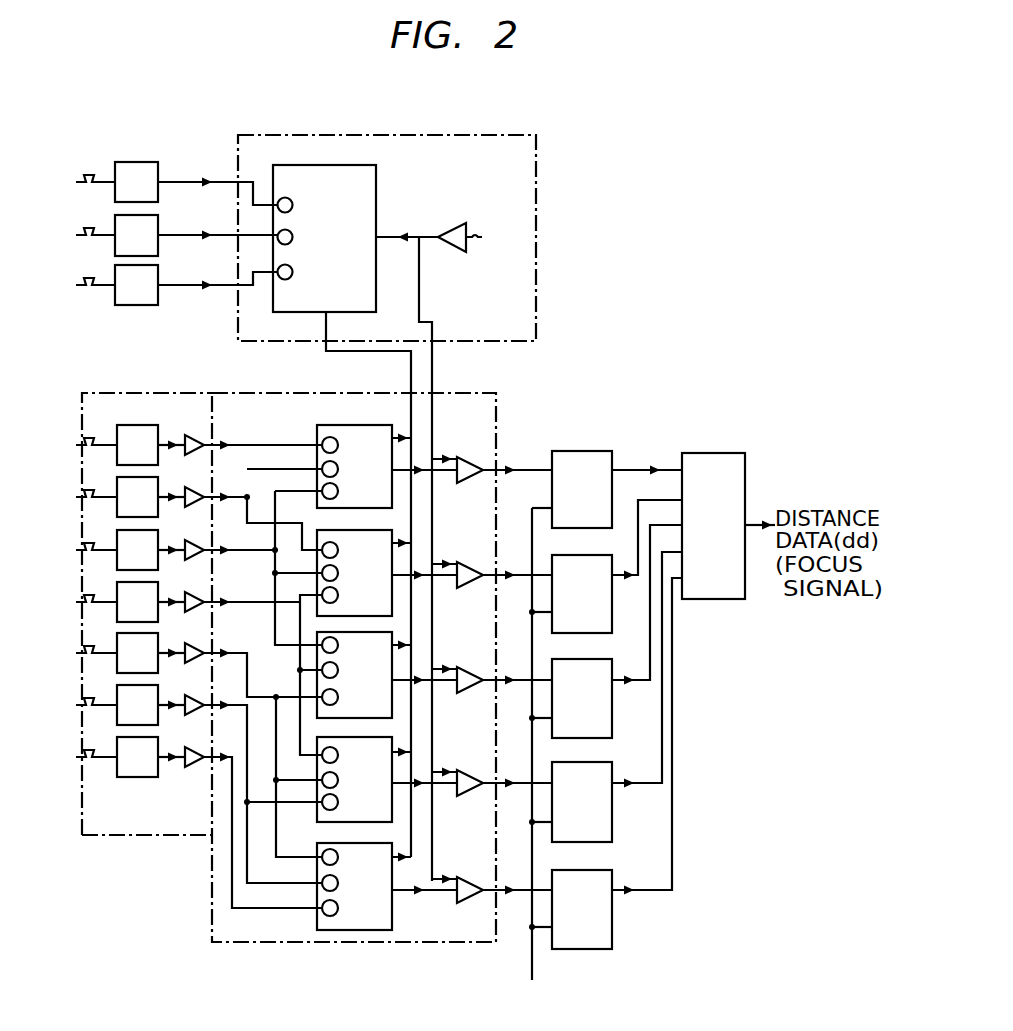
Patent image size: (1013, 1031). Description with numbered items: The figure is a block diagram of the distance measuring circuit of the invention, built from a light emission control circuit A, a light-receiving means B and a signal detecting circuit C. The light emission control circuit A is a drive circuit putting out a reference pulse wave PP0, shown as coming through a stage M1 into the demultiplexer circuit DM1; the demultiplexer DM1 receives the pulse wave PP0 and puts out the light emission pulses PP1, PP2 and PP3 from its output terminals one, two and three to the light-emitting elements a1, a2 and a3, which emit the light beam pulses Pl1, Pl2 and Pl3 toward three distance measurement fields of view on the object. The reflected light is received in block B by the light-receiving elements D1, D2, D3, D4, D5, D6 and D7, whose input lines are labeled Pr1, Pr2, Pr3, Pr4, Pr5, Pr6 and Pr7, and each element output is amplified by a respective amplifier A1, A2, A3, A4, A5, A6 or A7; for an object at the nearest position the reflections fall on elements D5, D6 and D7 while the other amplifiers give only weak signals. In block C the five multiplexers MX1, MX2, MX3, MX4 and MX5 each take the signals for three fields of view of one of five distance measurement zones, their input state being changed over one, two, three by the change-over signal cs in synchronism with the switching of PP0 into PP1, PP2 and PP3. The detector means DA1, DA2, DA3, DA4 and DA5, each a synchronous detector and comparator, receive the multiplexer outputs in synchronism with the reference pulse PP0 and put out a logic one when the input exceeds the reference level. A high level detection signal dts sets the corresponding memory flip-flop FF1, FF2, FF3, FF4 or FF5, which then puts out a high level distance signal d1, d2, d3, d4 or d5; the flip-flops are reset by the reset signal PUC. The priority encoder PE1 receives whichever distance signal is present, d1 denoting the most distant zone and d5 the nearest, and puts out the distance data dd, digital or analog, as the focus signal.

The light emission control circuit A is at (478, 135).
The light-receiving means B is at (104, 822).
The signal detecting circuit C is at (232, 945).
The light-emitting element a1 is at (136, 182).
The light-emitting element a2 is at (136, 235).
The light-emitting element a3 is at (136, 285).
The light beam pulse Pl1 is at (72, 183).
The light beam pulse Pl2 is at (72, 236).
The light beam pulse Pl3 is at (72, 286).
The light emission pulse PP1 is at (217, 181).
The light emission pulse PP2 is at (217, 225).
The light emission pulse PP3 is at (217, 275).
The pulse wave PP0 is at (447, 363).
The demultiplexer circuit DM1 is at (324, 238).
The monostable multivibrator M1 is at (475, 237).
The change-over signal cs is at (368, 587).
The light receiving element signal 1 Pr1 is at (73, 446).
The light receiving element signal 2 Pr2 is at (73, 498).
The light receiving element signal 3 Pr3 is at (73, 551).
The light receiving element signal 4 Pr4 is at (73, 603).
The light receiving element signal 5 Pr5 is at (73, 654).
The light receiving element signal 6 Pr6 is at (73, 706).
The light receiving element signal 7 Pr7 is at (73, 758).
The light-receiving element D1 is at (151, 445).
The light-receiving element D2 is at (151, 497).
The light-receiving element D3 is at (151, 550).
The light-receiving element D4 is at (151, 602).
The light-receiving element D5 is at (151, 653).
The light-receiving element D6 is at (151, 705).
The light-receiving element D7 is at (151, 757).
The amplifier A1 is at (251, 434).
The amplifier A2 is at (251, 508).
The amplifier A3 is at (251, 568).
The amplifier A4 is at (251, 663).
The amplifier A5 is at (251, 739).
The amplifier A6 is at (251, 778).
The amplifier A7 is at (251, 817).
The multiplexer MX1 is at (387, 466).
The multiplexer MX2 is at (387, 573).
The multiplexer MX3 is at (387, 675).
The multiplexer MX4 is at (387, 779).
The multiplexer MX5 is at (387, 886).
The detector means DA1 is at (499, 456).
The detector means DA2 is at (499, 561).
The detector means DA3 is at (499, 666).
The detector means DA4 is at (499, 769).
The detector means DA5 is at (499, 876).
The detection signal dts is at (521, 455).
The memory flip-flop circuit FF1 is at (572, 489).
The memory flip-flop circuit FF2 is at (570, 594).
The memory flip-flop circuit FF3 is at (570, 698).
The memory flip-flop circuit FF4 is at (570, 802).
The memory flip-flop circuit FF5 is at (570, 909).
The reset signal PUC is at (533, 760).
The distance signal d1 is at (647, 459).
The distance signal d2 is at (647, 553).
The distance signal d3 is at (647, 617).
The distance signal d4 is at (647, 682).
The distance signal d5 is at (647, 748).
The encoder PE1 is at (728, 526).